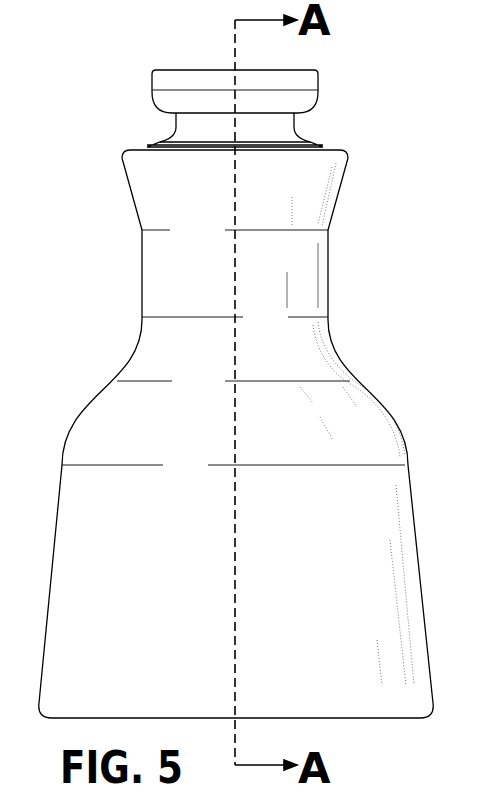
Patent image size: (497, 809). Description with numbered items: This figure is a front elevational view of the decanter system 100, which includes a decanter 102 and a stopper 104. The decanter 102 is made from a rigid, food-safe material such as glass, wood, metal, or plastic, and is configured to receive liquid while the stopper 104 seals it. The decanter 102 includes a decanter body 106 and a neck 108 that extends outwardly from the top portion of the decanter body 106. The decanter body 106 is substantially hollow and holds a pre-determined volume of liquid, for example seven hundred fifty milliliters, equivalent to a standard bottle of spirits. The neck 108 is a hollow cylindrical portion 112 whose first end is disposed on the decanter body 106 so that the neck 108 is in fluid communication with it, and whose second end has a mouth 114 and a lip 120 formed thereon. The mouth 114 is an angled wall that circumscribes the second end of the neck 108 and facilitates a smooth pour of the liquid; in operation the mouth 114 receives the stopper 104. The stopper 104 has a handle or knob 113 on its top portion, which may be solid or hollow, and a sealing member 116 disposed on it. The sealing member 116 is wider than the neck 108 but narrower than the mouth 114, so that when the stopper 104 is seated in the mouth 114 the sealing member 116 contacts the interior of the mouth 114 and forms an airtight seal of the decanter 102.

The decanter system 100 is at (67, 252).
The decanter 102 is at (383, 515).
The stopper 104 is at (318, 82).
The decanter body 106 is at (269, 502).
The neck 108 is at (323, 285).
The hollow cylindrical portion 112 is at (276, 280).
The knob 113 is at (152, 84).
The mouth 114 is at (337, 193).
The sealing member 116 is at (323, 148).
The lip 120 is at (138, 148).